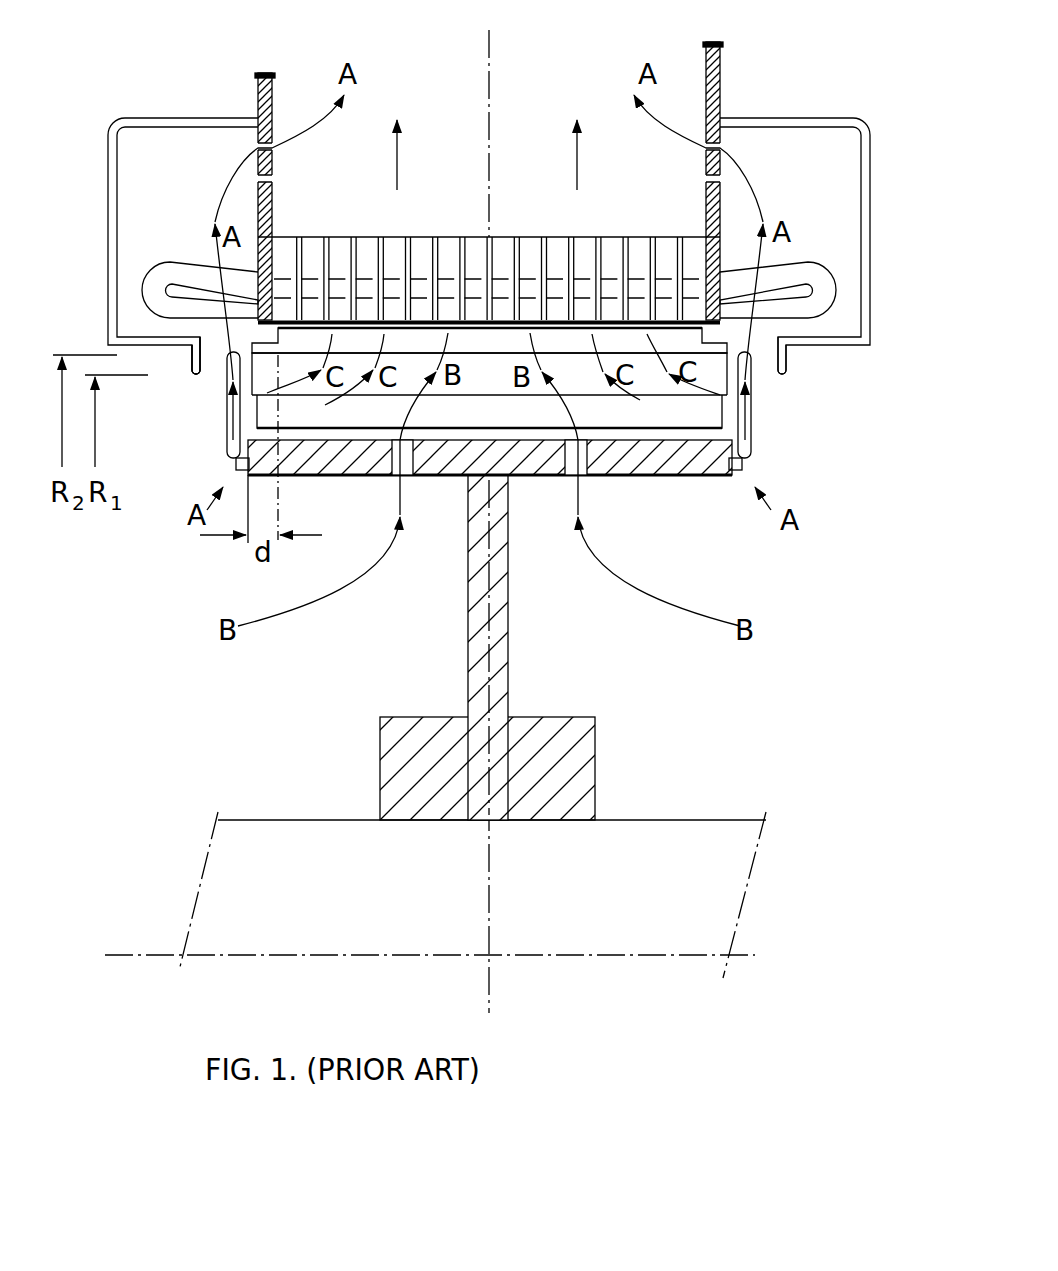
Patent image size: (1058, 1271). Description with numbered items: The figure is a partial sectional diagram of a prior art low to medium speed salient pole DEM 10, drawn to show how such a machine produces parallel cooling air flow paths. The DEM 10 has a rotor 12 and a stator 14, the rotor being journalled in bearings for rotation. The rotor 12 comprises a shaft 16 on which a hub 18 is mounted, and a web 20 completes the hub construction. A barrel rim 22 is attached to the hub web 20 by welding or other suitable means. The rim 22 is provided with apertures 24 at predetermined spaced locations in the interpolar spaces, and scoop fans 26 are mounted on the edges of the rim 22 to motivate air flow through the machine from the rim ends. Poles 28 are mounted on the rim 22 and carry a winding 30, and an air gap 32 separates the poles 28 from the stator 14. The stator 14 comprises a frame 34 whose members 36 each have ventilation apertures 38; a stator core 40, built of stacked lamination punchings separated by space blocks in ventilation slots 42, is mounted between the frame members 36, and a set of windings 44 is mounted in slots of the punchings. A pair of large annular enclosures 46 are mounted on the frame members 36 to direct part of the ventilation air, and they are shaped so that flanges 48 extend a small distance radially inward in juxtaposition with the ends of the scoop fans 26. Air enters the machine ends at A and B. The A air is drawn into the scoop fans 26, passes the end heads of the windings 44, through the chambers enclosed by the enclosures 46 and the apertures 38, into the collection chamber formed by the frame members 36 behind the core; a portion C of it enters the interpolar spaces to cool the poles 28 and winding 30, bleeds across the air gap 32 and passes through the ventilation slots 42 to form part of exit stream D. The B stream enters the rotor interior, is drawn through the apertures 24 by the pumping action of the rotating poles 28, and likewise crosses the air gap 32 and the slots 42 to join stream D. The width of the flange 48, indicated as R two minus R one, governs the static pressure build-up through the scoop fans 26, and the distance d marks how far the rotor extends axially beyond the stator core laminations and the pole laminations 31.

The DEM 10 is at (736, 708).
The rotor 12 is at (516, 657).
The stator 14 is at (730, 228).
The shaft 16 is at (671, 819).
The hub 18 is at (568, 716).
The web 20 is at (510, 600).
The barrel rim 22 is at (652, 478).
The apertures 24 is at (402, 477).
The scoop fans 26 is at (230, 440).
The poles 28 is at (684, 418).
The winding 30 is at (722, 372).
The pole laminations 31 is at (195, 358).
The air gap 32 is at (596, 378).
The frame 34 is at (623, 43).
The frame members 36 is at (273, 212).
The ventilation apertures 38 is at (258, 150).
The stator core 40 is at (525, 237).
The ventilation slots 42 is at (574, 226).
The windings 44 is at (166, 268).
The enclosures 46 is at (108, 188).
The flanges 48 is at (190, 372).